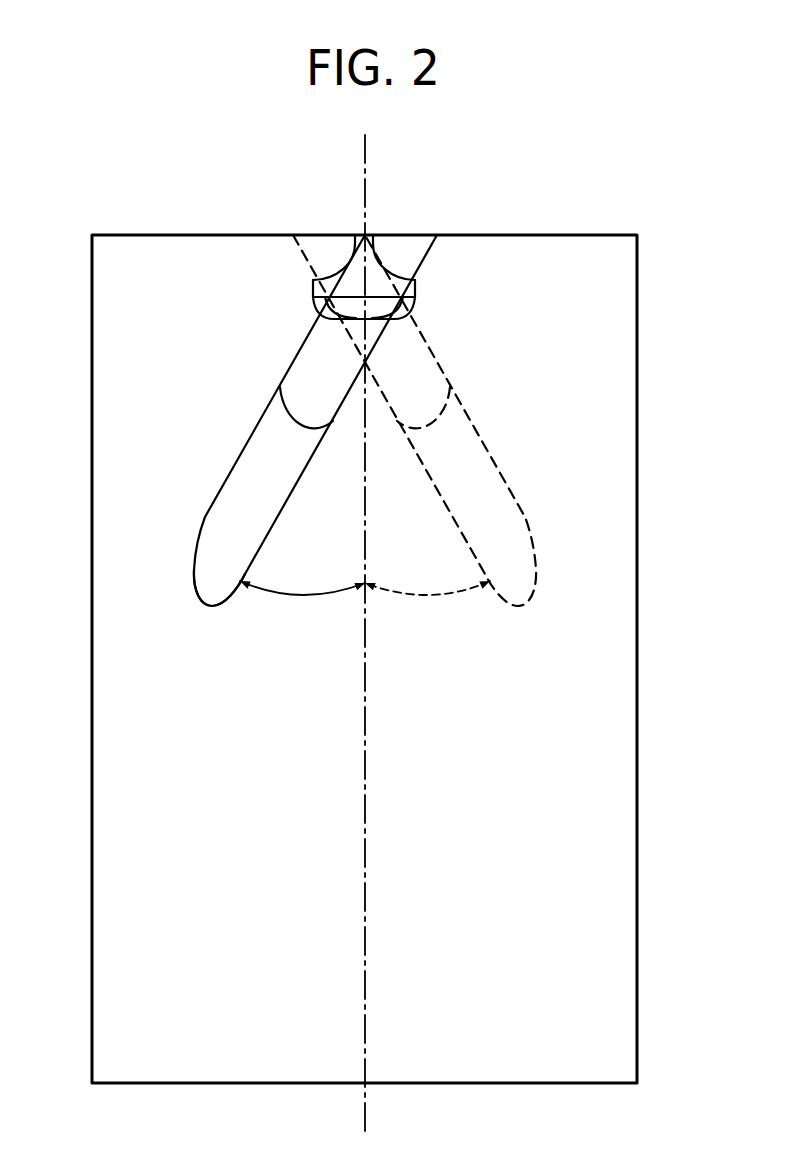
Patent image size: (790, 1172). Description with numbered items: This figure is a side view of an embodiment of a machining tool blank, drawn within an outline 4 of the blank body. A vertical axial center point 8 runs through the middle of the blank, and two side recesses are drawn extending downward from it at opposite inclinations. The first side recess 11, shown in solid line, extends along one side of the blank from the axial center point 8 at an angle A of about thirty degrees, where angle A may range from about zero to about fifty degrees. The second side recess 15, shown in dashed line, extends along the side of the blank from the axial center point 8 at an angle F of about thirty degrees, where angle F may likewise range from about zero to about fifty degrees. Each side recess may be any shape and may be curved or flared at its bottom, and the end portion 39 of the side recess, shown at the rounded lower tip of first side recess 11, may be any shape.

The processing chamber 4 is at (638, 688).
The axial center point 8 is at (366, 183).
The first side recess 11 is at (260, 458).
The second side recess 15 is at (470, 458).
The end portion 39 is at (216, 577).
The angle A is at (298, 595).
The angle F is at (433, 595).